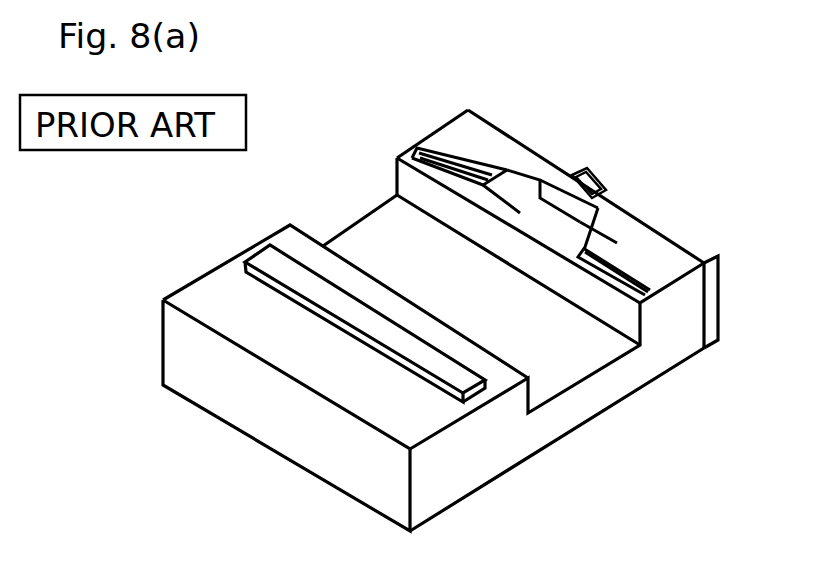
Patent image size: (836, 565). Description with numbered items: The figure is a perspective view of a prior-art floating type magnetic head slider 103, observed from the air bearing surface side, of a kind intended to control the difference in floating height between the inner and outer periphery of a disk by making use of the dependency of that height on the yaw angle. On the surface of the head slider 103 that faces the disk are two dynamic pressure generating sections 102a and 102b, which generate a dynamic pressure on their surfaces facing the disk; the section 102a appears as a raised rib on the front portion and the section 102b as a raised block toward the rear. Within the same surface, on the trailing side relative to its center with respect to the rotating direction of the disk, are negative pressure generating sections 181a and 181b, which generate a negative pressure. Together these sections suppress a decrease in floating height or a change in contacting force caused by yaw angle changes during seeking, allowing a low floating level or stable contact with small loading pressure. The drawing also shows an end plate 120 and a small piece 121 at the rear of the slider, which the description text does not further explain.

The head slider 103 is at (668, 511).
The dynamic pressure generating section 102a is at (190, 283).
The dynamic pressure generating section 102b is at (430, 132).
The end plate 120 is at (710, 335).
The small mounting piece 121 is at (587, 175).
The negative pressure generating section 181a is at (580, 222).
The negative pressure generating section 181b is at (517, 192).